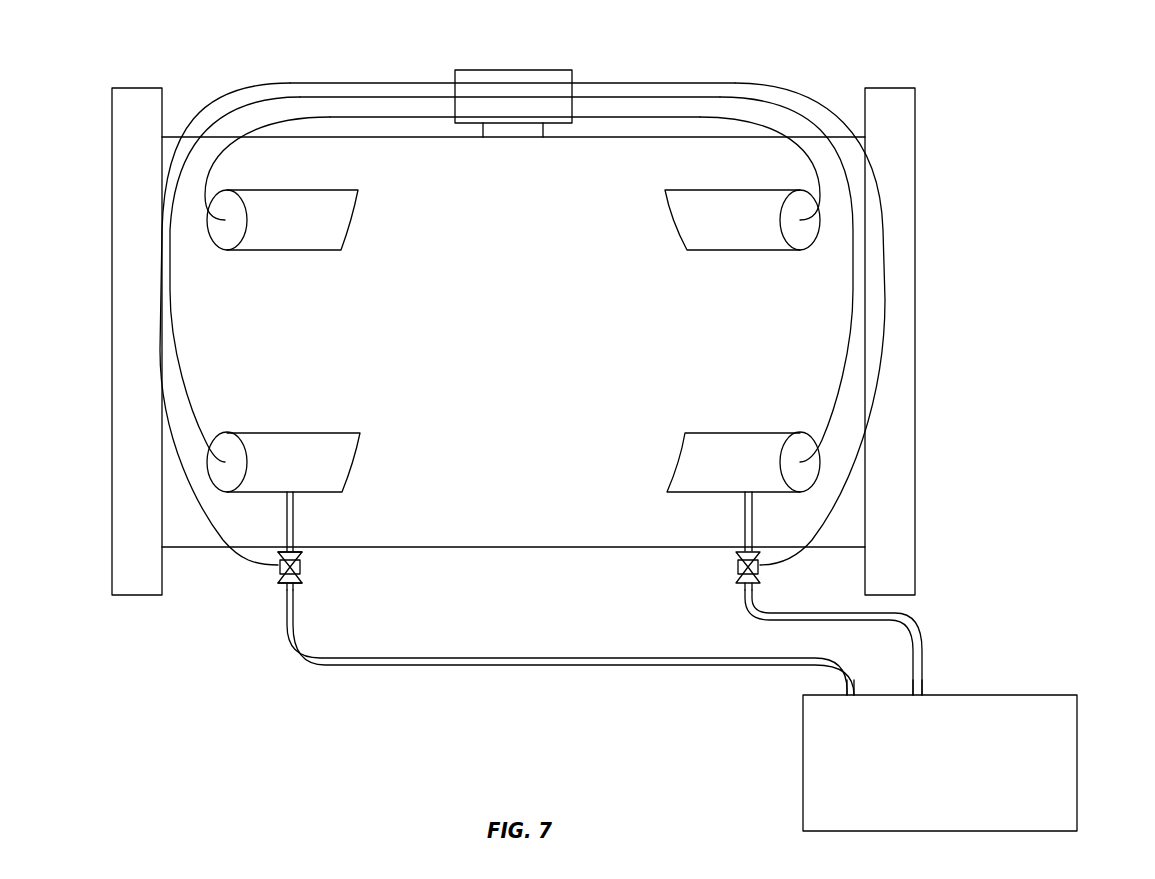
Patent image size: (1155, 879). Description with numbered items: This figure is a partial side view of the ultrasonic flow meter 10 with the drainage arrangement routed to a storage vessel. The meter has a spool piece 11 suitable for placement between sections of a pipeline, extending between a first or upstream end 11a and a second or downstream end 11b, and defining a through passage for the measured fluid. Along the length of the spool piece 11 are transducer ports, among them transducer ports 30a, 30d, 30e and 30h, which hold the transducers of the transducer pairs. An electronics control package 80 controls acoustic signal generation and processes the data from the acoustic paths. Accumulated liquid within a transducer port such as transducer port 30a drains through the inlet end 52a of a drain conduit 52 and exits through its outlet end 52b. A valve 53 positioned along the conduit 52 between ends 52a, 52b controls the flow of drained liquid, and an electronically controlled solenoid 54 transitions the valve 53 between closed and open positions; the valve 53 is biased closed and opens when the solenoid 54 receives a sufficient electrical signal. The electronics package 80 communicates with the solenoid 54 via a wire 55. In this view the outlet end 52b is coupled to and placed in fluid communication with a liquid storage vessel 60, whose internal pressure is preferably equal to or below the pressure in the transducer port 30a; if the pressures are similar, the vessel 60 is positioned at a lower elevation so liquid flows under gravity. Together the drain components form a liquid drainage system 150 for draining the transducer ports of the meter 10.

The ultrasonic flow meter 10 is at (845, 58).
The spool piece 11 is at (522, 535).
The first end 11a is at (125, 86).
The second end 11b is at (908, 86).
The transducer port 30a is at (313, 433).
The transducer port 30d is at (716, 433).
The transducer port 30e is at (313, 191).
The transducer port 30h is at (716, 191).
The drain conduit 52 is at (333, 667).
The inlet end 52a is at (283, 505).
The outlet end 52b is at (845, 690).
The valve 53 is at (284, 584).
The solenoid 54 is at (304, 567).
The wire 55 is at (165, 373).
The storage vessel 60 is at (1035, 695).
The electronics package 80 is at (550, 70).
The liquid drainage system 150 is at (274, 578).